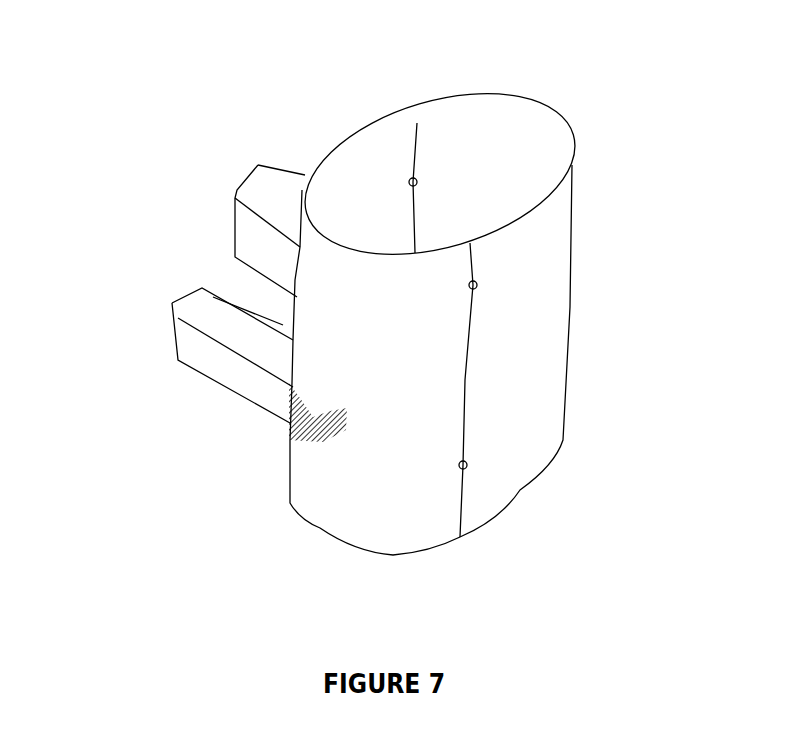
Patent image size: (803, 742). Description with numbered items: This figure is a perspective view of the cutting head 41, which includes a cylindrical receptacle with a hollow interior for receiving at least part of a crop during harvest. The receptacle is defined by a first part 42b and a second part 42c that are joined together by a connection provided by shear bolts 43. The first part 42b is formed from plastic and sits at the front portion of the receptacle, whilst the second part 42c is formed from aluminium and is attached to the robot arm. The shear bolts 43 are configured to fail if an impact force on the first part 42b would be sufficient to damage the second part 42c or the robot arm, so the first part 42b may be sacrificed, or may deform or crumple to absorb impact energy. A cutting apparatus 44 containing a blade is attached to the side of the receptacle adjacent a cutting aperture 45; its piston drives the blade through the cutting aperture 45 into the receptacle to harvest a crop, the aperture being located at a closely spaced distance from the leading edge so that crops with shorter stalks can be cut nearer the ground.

The cutting head 41 is at (378, 288).
The first part 42b is at (560, 310).
The second part 42c is at (323, 162).
The shear bolts 43 is at (412, 178).
The cutting apparatus 44 is at (177, 343).
The cutting aperture 45 is at (315, 428).